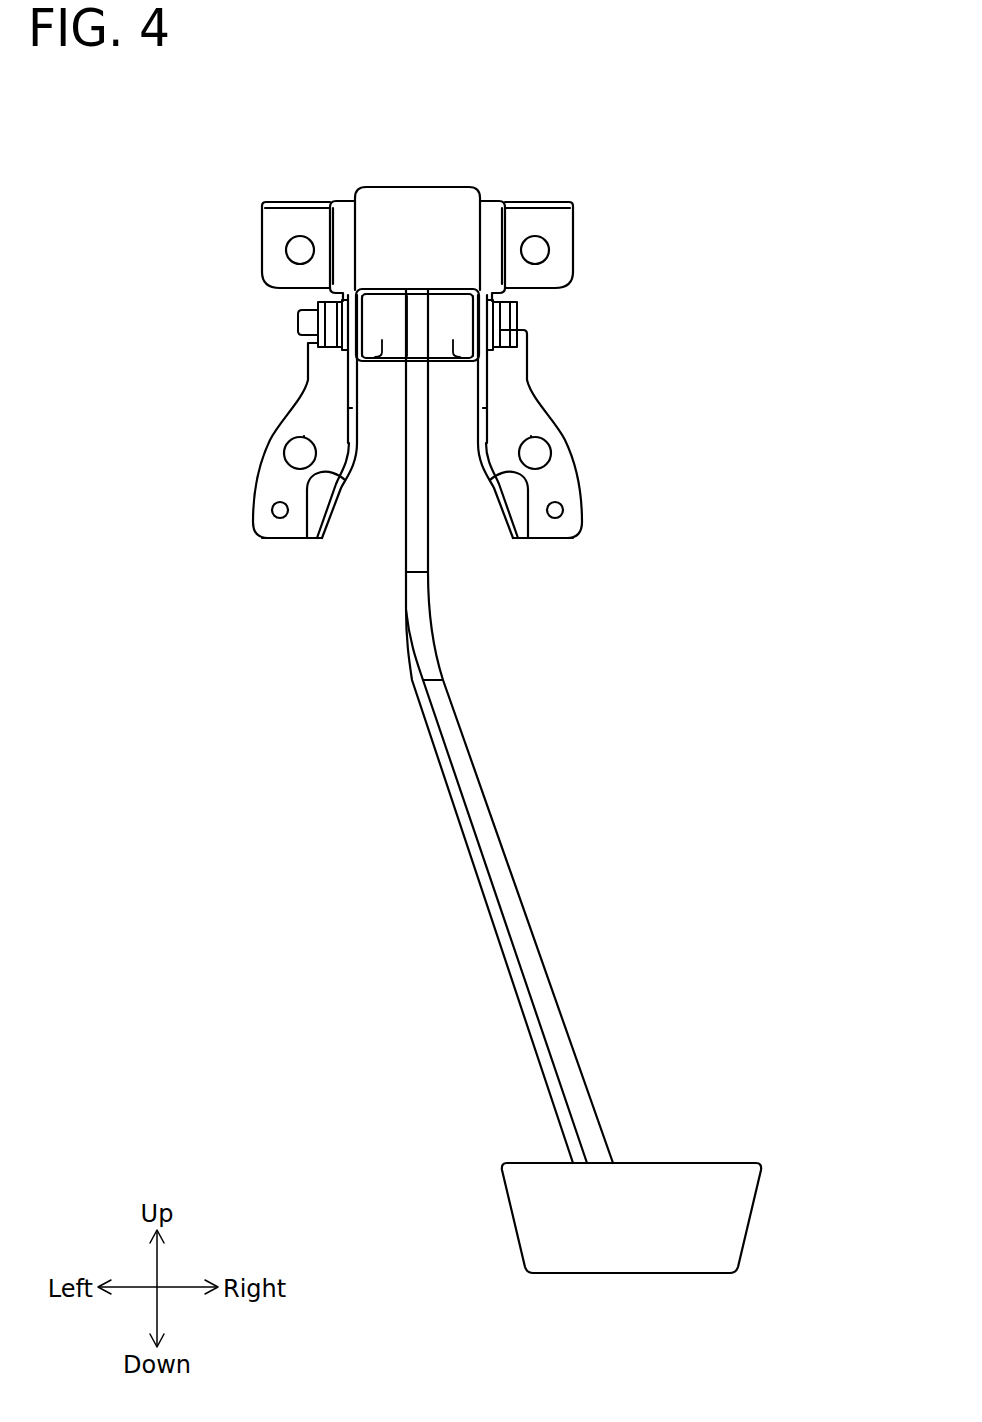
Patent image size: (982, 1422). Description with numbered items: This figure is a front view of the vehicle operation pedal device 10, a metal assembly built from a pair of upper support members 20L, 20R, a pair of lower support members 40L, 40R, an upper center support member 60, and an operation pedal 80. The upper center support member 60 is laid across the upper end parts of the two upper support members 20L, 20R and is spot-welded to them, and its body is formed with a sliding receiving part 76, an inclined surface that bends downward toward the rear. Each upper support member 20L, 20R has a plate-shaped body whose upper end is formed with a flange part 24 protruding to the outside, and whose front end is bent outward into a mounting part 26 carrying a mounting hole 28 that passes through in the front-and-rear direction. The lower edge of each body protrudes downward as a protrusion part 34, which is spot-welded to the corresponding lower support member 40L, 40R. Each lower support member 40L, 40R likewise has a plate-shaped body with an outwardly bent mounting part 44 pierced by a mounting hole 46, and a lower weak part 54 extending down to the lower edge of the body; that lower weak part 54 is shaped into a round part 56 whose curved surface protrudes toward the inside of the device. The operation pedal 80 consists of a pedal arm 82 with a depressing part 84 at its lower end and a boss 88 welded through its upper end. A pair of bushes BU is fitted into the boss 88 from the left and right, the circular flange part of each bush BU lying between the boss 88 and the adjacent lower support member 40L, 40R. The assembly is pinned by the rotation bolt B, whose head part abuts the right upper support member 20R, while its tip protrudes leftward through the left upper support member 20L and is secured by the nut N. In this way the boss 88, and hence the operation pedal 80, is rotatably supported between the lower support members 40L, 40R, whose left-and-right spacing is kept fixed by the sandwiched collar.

The vehicle operation pedal device 10 is at (663, 130).
The upper support member 20L is at (344, 385).
The upper support member 20R is at (491, 385).
The flange part 24 is at (342, 213).
The mounting part 26 is at (294, 218).
The mounting hole 28 is at (287, 254).
The protrusion part 34 is at (348, 427).
The lower support member 40L is at (303, 437).
The lower support member 40R is at (532, 437).
The mounting part 44 is at (272, 512).
The mounting hole 46 is at (300, 469).
The lower weak part 54 is at (300, 540).
The round part 56 is at (358, 478).
The upper center support member 60 is at (444, 184).
The sliding receiving part 76 is at (410, 203).
The operation pedal 80 is at (533, 905).
The pedal arm 82 is at (492, 852).
The depressing part 84 is at (698, 1188).
The boss 88 is at (378, 350).
The rotation bolt B is at (505, 330).
The nut N is at (316, 330).
The bush BU is at (342, 305).